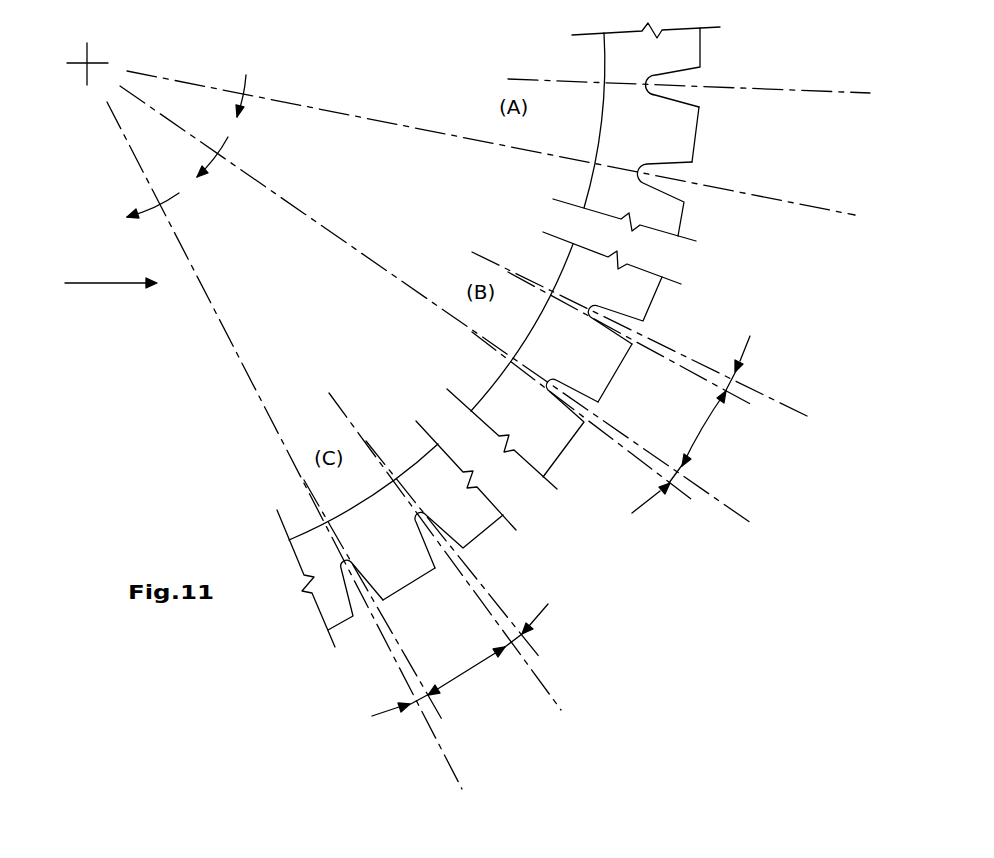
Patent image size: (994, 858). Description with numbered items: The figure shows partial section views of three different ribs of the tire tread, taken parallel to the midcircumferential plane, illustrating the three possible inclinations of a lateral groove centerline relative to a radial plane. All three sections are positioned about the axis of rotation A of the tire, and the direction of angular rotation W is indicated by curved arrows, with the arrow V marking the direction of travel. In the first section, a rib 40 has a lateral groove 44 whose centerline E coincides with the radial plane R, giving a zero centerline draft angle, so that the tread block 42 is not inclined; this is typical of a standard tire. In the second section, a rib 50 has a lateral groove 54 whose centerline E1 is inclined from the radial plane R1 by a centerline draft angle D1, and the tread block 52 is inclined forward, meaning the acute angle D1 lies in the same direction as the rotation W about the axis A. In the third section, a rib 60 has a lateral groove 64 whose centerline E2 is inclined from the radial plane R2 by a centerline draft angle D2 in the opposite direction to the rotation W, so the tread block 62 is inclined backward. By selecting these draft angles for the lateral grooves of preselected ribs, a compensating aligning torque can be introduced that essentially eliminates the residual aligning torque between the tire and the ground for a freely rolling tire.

The rib 40 is at (705, 61).
The tread block 42 is at (681, 137).
The lateral groove 44 is at (682, 176).
The rib 50 is at (660, 310).
The tread block 52 is at (610, 366).
The lateral groove 54 is at (580, 411).
The rib 60 is at (479, 552).
The tread block 62 is at (405, 565).
The lateral groove 64 is at (367, 596).
The axis of rotation A is at (90, 60).
The angular rotation W is at (203, 141).
The feed direction V is at (111, 273).
The radial plane R is at (498, 143).
The lateral groove centerline E is at (784, 200).
The radial plane R1 is at (712, 497).
The lateral groove centerline E1 is at (688, 498).
The centerline draft angle D1 is at (692, 426).
The radial plane R2 is at (452, 770).
The lateral groove centerline E2 is at (433, 711).
The centerline draft angle D2 is at (472, 661).